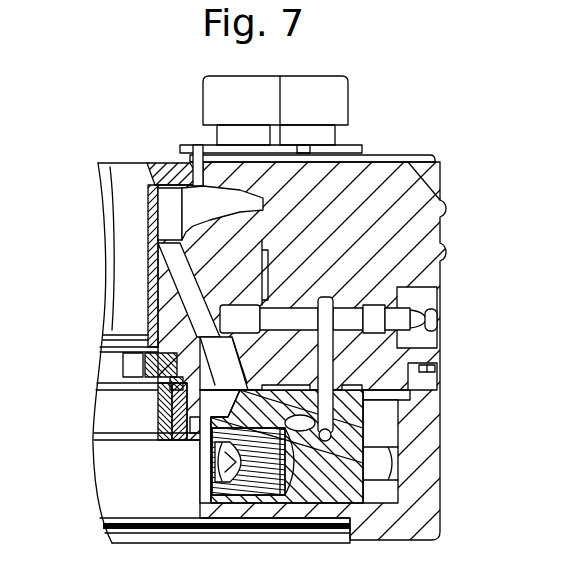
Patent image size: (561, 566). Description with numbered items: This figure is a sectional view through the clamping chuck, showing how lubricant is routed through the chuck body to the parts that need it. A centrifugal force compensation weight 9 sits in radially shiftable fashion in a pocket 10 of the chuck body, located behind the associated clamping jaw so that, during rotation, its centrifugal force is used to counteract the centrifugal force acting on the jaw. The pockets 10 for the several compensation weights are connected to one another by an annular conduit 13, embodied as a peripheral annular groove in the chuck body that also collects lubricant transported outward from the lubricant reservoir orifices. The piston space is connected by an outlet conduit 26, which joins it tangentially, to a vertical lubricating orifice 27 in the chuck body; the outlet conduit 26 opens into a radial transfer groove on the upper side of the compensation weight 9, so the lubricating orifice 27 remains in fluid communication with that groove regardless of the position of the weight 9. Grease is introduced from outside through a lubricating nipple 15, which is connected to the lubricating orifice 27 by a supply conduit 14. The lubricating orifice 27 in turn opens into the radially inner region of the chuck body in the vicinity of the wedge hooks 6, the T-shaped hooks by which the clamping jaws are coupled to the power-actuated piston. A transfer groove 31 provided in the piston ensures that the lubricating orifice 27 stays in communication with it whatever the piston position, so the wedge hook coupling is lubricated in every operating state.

The wedge hook 6 is at (200, 280).
The transfer groove 31 is at (230, 263).
The supply conduit 14 is at (347, 317).
The lubricating nipple 15 is at (427, 322).
The lubricating orifice 27 is at (325, 363).
The annular conduit 13 is at (430, 392).
The outlet conduit 26 is at (323, 413).
The centrifugal force compensation weight 9 is at (350, 460).
The pocket 10 is at (390, 487).